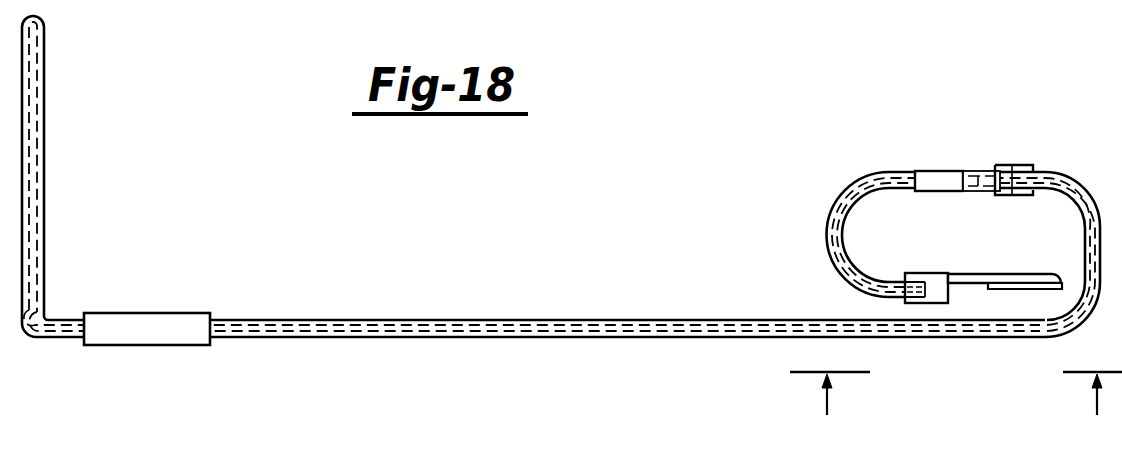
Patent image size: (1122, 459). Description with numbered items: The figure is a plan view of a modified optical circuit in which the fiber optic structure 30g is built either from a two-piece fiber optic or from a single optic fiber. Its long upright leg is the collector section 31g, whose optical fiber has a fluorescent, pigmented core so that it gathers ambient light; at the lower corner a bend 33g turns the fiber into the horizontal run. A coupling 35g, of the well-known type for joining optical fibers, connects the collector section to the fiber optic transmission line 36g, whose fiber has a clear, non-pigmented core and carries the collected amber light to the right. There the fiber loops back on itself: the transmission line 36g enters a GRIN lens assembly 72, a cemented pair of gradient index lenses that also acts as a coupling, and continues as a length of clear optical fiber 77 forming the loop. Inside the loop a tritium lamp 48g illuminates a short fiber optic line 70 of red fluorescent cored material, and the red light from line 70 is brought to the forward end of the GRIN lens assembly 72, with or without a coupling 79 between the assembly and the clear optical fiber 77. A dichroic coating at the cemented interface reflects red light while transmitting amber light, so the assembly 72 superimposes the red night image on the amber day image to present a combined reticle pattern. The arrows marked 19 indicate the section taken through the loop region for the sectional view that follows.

The fiber optic structure 30g is at (45, 120).
The collector section 31g is at (43, 197).
The bend 33g is at (55, 340).
The coupling 35g is at (107, 312).
The fiber optic transmission line 36g is at (267, 337).
The clear optical fiber 77 is at (828, 238).
The GRIN lens assembly 72 is at (943, 172).
The coupling 79 is at (939, 273).
The tritium lamp 48g is at (1040, 236).
The fiber optic line 70 is at (990, 289).
The section line 19- 19 is at (956, 412).